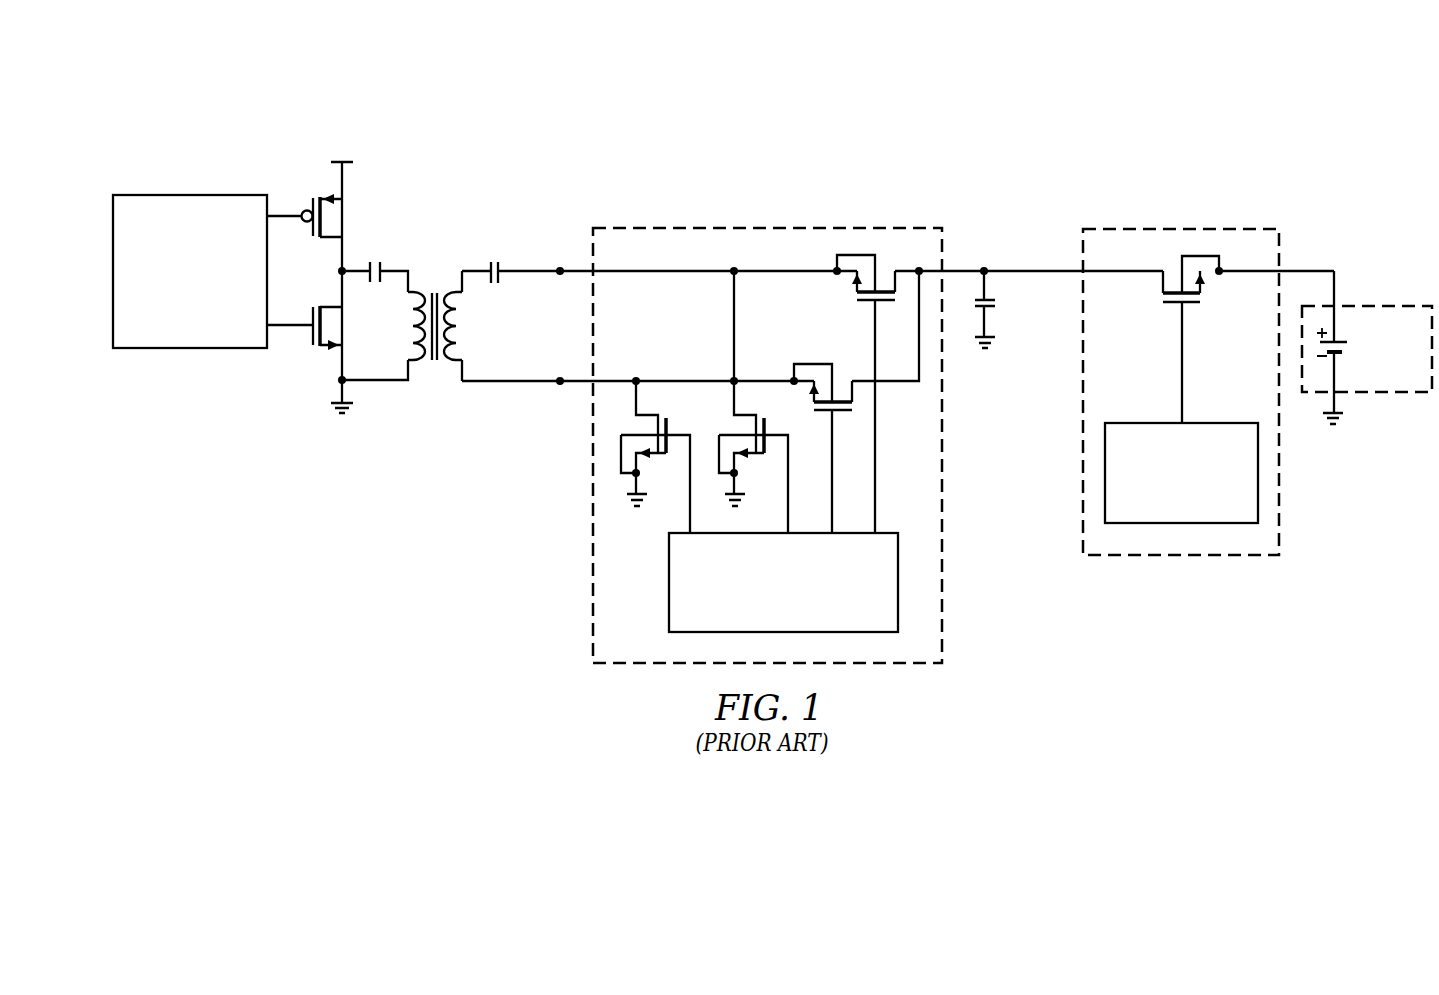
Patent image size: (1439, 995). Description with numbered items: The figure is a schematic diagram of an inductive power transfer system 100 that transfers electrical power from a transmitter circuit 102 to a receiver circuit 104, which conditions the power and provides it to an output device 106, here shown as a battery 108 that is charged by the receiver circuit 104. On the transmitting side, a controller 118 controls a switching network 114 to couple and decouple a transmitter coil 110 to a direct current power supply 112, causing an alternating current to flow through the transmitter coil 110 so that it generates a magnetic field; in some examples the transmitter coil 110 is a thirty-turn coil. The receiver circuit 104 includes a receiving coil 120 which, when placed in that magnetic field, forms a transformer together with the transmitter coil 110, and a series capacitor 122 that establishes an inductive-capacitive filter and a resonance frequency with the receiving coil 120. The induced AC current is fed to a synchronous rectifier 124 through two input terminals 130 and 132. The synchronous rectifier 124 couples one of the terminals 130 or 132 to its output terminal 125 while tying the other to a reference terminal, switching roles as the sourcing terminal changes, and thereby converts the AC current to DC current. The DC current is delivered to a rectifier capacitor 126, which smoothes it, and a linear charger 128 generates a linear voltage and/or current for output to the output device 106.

The inductive power transfer system 100 is at (1253, 128).
The transmitter circuit 102 is at (430, 112).
The receiver circuit 104 is at (592, 147).
The output device 106 is at (1387, 302).
The battery 108 is at (1350, 343).
The transmitter coil 110 is at (415, 292).
The direct current (DC) power supply 112 is at (337, 162).
The switching network 114 is at (383, 220).
The controller 118 is at (190, 193).
The receiving coil 120 is at (453, 362).
The series capacitor 122 is at (494, 258).
The synchronous rectifier 124 is at (757, 226).
The output terminal 125 is at (962, 268).
The rectifier capacitor 126 is at (998, 305).
The linear charger 128 is at (1192, 226).
The input terminal 130 is at (560, 265).
The input terminal 132 is at (560, 387).